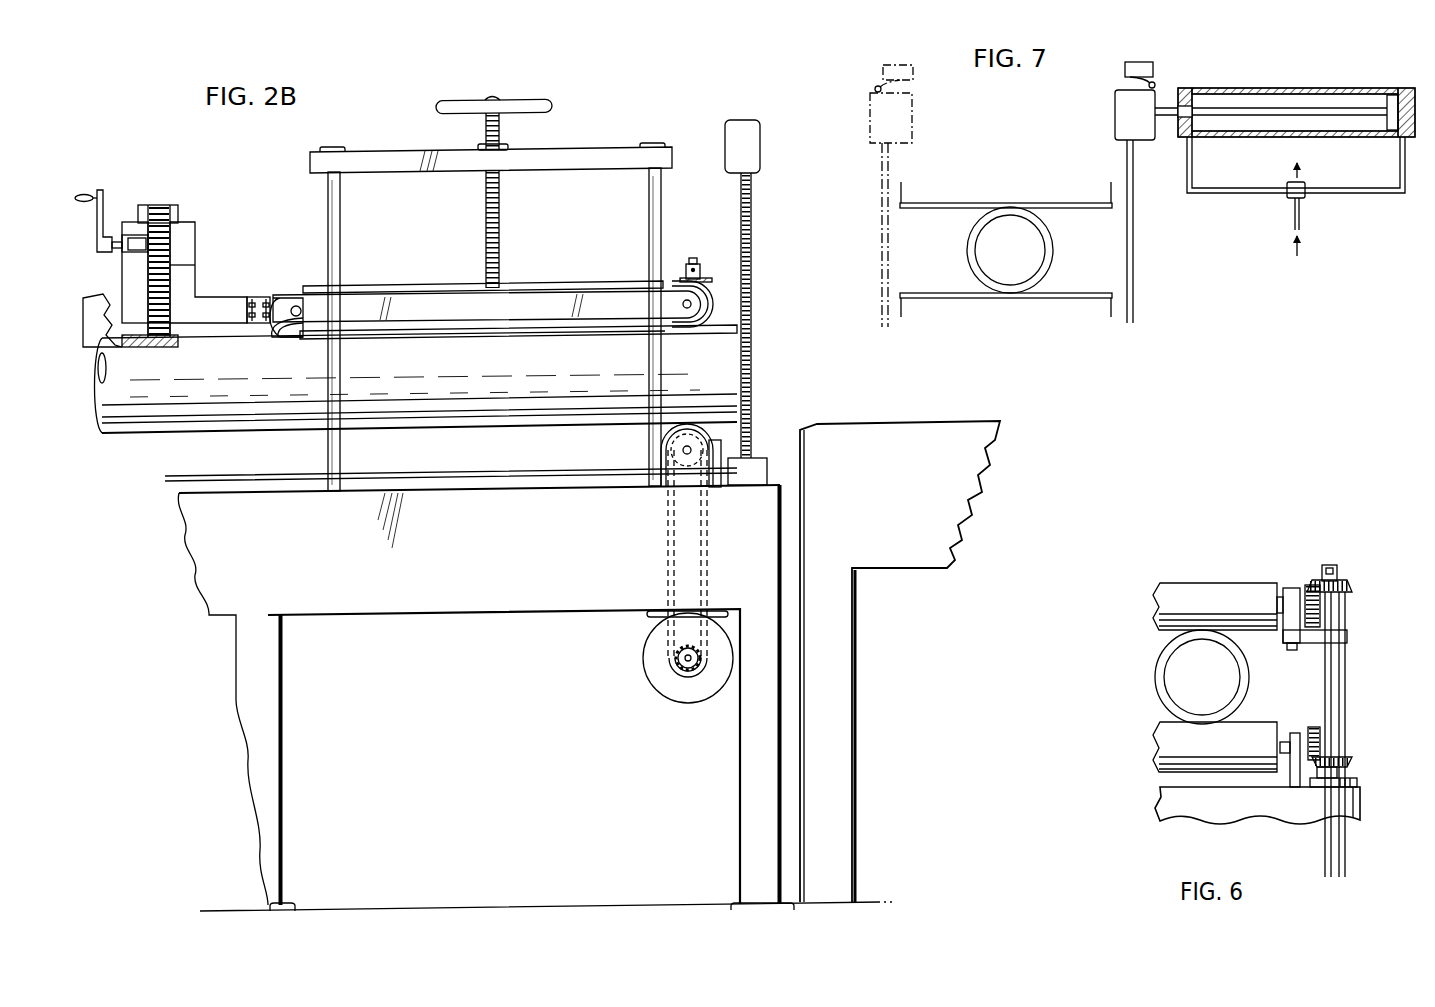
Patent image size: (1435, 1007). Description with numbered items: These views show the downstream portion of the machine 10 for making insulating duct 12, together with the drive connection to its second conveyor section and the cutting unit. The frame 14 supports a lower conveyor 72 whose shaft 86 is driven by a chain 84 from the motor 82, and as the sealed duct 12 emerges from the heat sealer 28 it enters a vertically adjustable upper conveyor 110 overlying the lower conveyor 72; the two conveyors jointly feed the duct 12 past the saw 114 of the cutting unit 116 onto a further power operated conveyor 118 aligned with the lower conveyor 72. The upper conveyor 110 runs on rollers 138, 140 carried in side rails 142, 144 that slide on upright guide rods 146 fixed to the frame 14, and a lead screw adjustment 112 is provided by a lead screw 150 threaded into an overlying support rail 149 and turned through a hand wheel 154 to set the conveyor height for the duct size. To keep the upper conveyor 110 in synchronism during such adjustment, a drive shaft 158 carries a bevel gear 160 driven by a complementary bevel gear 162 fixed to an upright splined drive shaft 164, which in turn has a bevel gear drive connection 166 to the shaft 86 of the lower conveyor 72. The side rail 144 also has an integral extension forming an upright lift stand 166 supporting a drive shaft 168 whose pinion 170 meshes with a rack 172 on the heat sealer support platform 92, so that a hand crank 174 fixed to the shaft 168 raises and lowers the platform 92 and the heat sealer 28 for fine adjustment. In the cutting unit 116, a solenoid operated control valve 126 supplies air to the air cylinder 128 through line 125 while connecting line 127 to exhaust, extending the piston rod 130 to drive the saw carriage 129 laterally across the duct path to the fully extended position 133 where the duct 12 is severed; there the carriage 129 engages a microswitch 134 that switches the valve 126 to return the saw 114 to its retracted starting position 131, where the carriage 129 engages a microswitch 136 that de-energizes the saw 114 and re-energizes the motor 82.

In FIG. 2B, the machine 10 is at (605, 109).
In FIG. 2B, the insulating duct 12 is at (271, 376).
In FIG. 7, the insulating duct 12 is at (961, 248).
In FIG. 6, the insulating duct 12 is at (1151, 677).
In FIG. 2B, the frame 14 is at (289, 569).
In FIG. 6, the frame 14 is at (1160, 805).
In FIG. 2B, the heat sealer 28 is at (104, 297).
In FIG. 2B, the lower conveyor 72 is at (230, 433).
In FIG. 7, the lower conveyor 72 is at (938, 293).
In FIG. 6, the lower conveyor 72 is at (1157, 718).
In FIG. 2B, the motor 82 is at (660, 688).
In FIG. 2B, the drive chain 84 is at (668, 640).
In FIG. 2B, the drive shaft of lower conveyor 86 is at (683, 450).
In FIG. 6, the drive shaft of lower conveyor 86 is at (1290, 740).
In FIG. 2B, the support platform 92 is at (128, 349).
In FIG. 2B, the upper conveyor 110 is at (399, 283).
In FIG. 7, the upper conveyor 110 is at (1068, 213).
In FIG. 6, the upper conveyor 110 is at (1224, 578).
In FIG. 2B, the lead screw adjustment 112 is at (500, 97).
In FIG. 2B, the saw 114 is at (752, 202).
In FIG. 7, the saw 114 is at (882, 222).
In FIG. 2B, the cutting unit 116 is at (721, 124).
In FIG. 7, the cutting unit 116 is at (1230, 71).
In FIG. 2B, the power operated conveyor 118 is at (848, 427).
In FIG. 7, the line 125 is at (1402, 168).
In FIG. 7, the solenoid operated control valve 126 is at (1306, 193).
In FIG. 7, the line 127 is at (1192, 172).
In FIG. 7, the air cylinder 128 is at (1318, 88).
In FIG. 7, the saw carriage 129 is at (870, 118).
In FIG. 7, the piston rod 130 is at (1166, 107).
In FIG. 7, the retracted starting position 131 is at (1108, 90).
In FIG. 7, the fully extended position 133 is at (866, 77).
In FIG. 7, the microswitch 134 is at (908, 65).
In FIG. 7, the microswitch 136 is at (1150, 62).
In FIG. 2B, the roller 138 is at (289, 340).
In FIG. 2B, the roller 140 is at (689, 325).
In FIG. 2B, the side rail 142 is at (586, 300).
In FIG. 2B, the side rail 144 is at (273, 300).
In FIG. 6, the side rail 144 is at (1291, 588).
In FIG. 2B, the upright guide rods 146 is at (340, 226).
In FIG. 2B, the support rail 149 is at (540, 162).
In FIG. 2B, the lead screw 150 is at (485, 128).
In FIG. 2B, the hand wheel 154 is at (436, 105).
In FIG. 2B, the drive shaft 158 is at (683, 304).
In FIG. 6, the drive shaft 158 is at (1283, 598).
In FIG. 6, the bevel gear 160 is at (1321, 626).
In FIG. 2B, the bevel gear 162 is at (700, 264).
In FIG. 6, the bevel gear 162 is at (1366, 558).
In FIG. 6, the upright splined drive shaft 164 is at (1325, 677).
In FIG. 2B, the lift stand 166 is at (190, 225).
In FIG. 6, the lift stand 166 is at (1306, 780).
In FIG. 2B, the drive shaft 168 is at (123, 238).
In FIG. 2B, the pinion 170 is at (195, 265).
In FIG. 2B, the rack 172 is at (166, 210).
In FIG. 2B, the hand crank 174 is at (98, 190).